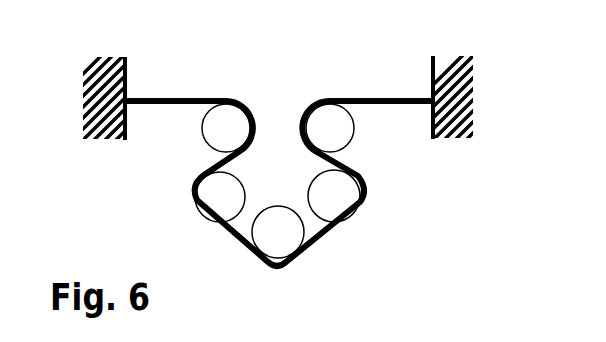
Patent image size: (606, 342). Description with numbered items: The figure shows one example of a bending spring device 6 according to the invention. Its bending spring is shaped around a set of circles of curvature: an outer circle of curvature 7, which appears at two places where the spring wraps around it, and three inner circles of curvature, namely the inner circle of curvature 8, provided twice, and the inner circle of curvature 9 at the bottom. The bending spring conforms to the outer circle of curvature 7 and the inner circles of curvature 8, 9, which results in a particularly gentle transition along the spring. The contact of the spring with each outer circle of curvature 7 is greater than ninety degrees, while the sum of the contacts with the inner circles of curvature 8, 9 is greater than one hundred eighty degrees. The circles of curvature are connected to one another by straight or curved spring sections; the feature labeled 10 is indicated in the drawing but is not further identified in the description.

The bending spring device 6 is at (366, 211).
The spring segment 10 is at (328, 243).
The outer circle of curvature K7 7 is at (204, 140).
The inner circle of curvature K8 8 is at (312, 177).
The inner circle of curvature K9 9 is at (260, 260).